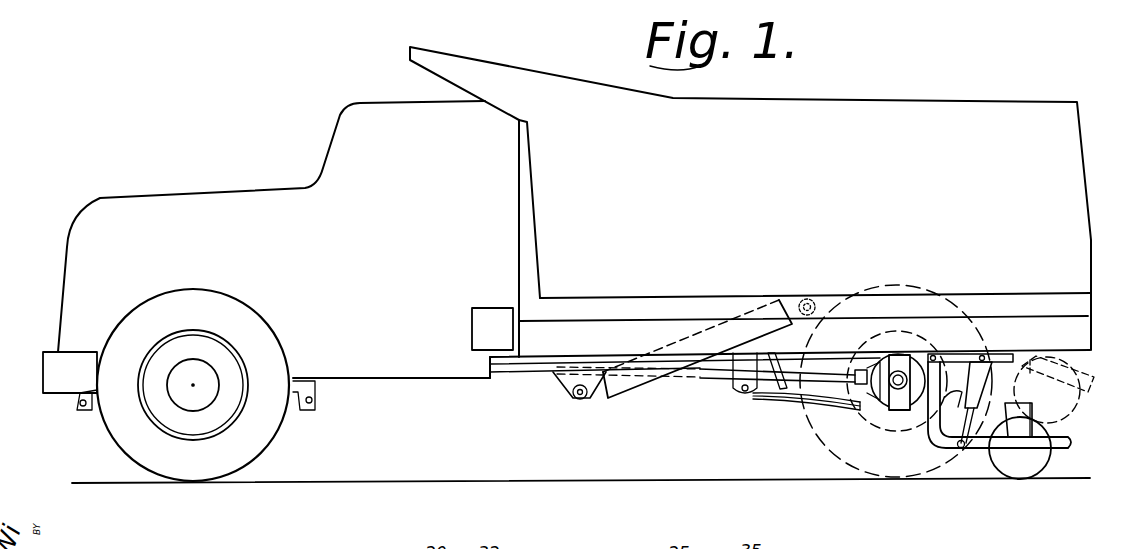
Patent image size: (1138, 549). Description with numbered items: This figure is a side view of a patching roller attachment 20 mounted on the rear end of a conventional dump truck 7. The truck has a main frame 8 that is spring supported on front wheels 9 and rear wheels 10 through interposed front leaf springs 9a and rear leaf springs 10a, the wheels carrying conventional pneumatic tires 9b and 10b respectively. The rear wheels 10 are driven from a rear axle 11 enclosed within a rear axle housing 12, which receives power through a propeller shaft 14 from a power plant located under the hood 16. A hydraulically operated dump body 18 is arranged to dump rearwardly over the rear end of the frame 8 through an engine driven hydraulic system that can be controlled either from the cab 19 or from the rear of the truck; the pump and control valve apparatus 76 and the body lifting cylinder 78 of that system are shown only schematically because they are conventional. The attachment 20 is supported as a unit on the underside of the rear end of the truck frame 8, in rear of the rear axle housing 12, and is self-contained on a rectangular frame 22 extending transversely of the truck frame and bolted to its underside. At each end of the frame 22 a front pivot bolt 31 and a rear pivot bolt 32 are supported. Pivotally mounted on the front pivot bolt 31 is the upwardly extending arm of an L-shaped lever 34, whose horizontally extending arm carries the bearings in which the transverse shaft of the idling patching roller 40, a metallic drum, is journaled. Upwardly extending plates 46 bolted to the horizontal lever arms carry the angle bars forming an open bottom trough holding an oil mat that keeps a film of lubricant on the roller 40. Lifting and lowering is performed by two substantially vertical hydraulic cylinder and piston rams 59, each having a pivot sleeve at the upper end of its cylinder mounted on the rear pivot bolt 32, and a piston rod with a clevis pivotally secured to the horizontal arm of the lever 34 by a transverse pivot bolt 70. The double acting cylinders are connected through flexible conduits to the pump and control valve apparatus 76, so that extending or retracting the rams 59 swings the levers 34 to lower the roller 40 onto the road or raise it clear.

The dump truck 7 is at (292, 128).
The main frame 8 is at (1077, 336).
The front wheels 9 is at (101, 428).
The front leaf springs 9a is at (297, 410).
The pneumatic tires 9b is at (130, 445).
The rear wheels 10 is at (825, 446).
The rear leaf springs 10a is at (797, 408).
The pneumatic tires 10b is at (842, 450).
The rear axle 11 is at (887, 383).
The rear axle housing 12 is at (896, 412).
The propeller shaft 14 is at (784, 385).
The hood 16 is at (157, 210).
The dump body 18 is at (925, 113).
The cab 19 is at (387, 122).
The patching roller attachment 20 is at (1083, 433).
The rectangular frame 22 is at (970, 343).
The pivot bolt 31 is at (905, 349).
The pivot bolt 32 is at (985, 353).
The L-shaped levers 34 is at (937, 442).
The patching roller 40 is at (1040, 466).
The upwardly extending plates 46 is at (1035, 419).
The hydraulic cylinder and piston rams 59 is at (953, 411).
The transverse pivot bolt 70 is at (961, 450).
The pump and control valve apparatus 76 is at (472, 328).
The body lifting cylinder 78 is at (705, 364).